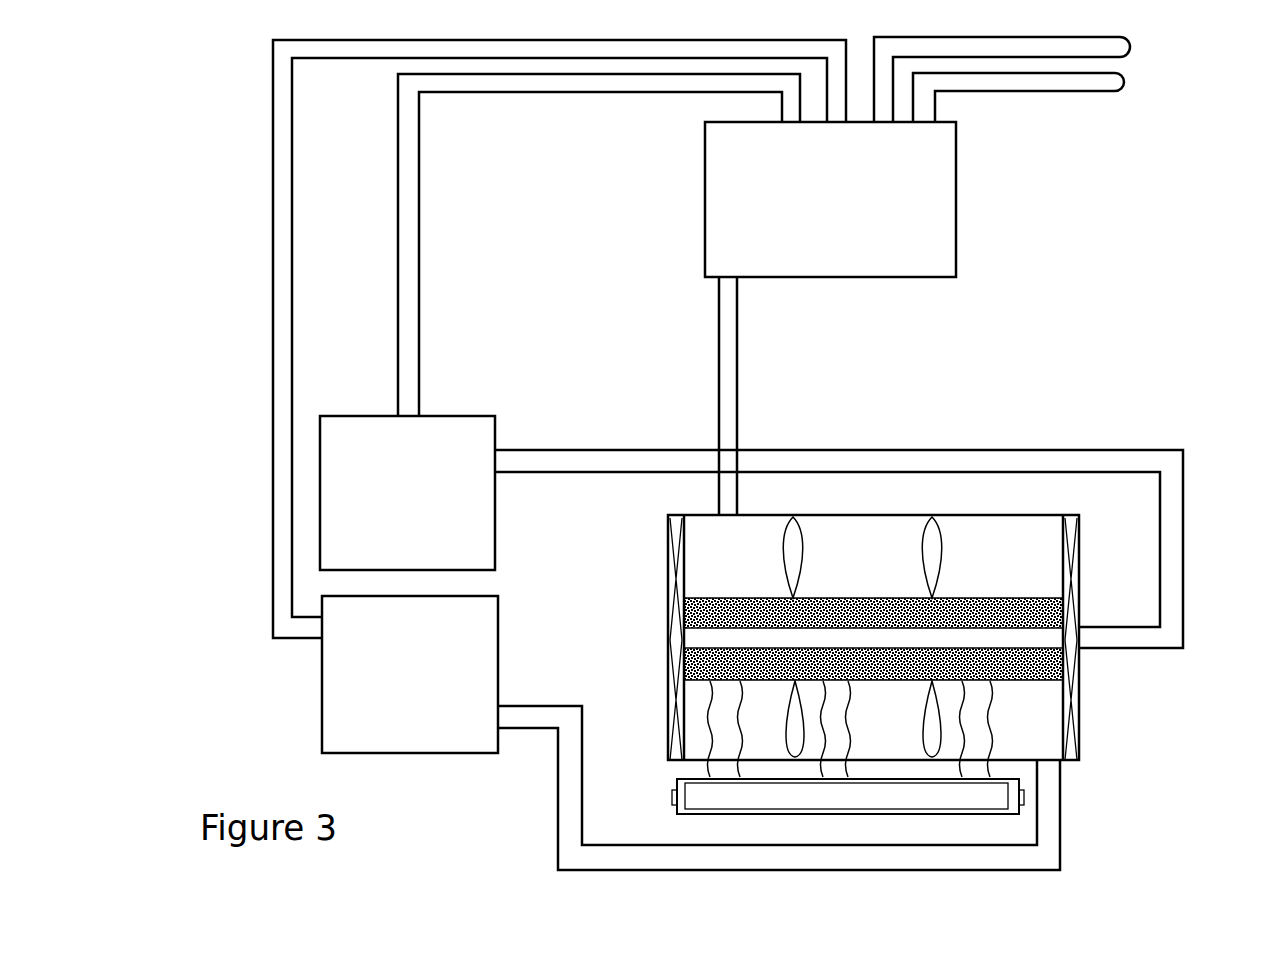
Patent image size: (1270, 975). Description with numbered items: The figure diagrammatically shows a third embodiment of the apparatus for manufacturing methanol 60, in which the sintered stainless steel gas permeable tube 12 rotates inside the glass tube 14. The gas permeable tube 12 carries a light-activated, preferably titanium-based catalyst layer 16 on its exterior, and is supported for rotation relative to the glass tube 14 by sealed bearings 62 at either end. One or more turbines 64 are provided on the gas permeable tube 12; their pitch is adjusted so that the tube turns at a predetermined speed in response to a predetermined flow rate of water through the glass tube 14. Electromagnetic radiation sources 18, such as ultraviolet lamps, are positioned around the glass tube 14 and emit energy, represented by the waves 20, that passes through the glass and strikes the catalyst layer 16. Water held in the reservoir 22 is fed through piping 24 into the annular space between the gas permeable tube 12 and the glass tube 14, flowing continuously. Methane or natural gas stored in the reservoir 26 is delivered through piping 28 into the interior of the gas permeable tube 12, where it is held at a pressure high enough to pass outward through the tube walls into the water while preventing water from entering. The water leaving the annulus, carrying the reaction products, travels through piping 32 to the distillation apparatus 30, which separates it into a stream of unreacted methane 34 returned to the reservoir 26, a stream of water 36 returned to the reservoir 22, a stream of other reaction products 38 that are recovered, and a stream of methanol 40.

The gas permeable tube 12 is at (723, 630).
The glass tube 14 is at (970, 515).
The light-activated catalyst layer 16 is at (893, 598).
The electromagnetic radiation source 18 is at (715, 797).
The waves 20 is at (712, 738).
The water reservoir 22 is at (322, 706).
The piping 24 is at (558, 828).
The methane reservoir 26 is at (382, 416).
The piping 28 is at (625, 450).
The distillation apparatus 30 is at (956, 210).
The piping 32 is at (737, 330).
The stream of unreacted methane 34 is at (590, 92).
The stream of water 36 is at (613, 40).
The stream of other reaction products 38 is at (1005, 37).
The stream of methanol 40 is at (987, 92).
The apparatus for manufacturing methanol 60 is at (240, 322).
The sealed bearings 62 is at (682, 545).
The turbines 64 is at (805, 545).